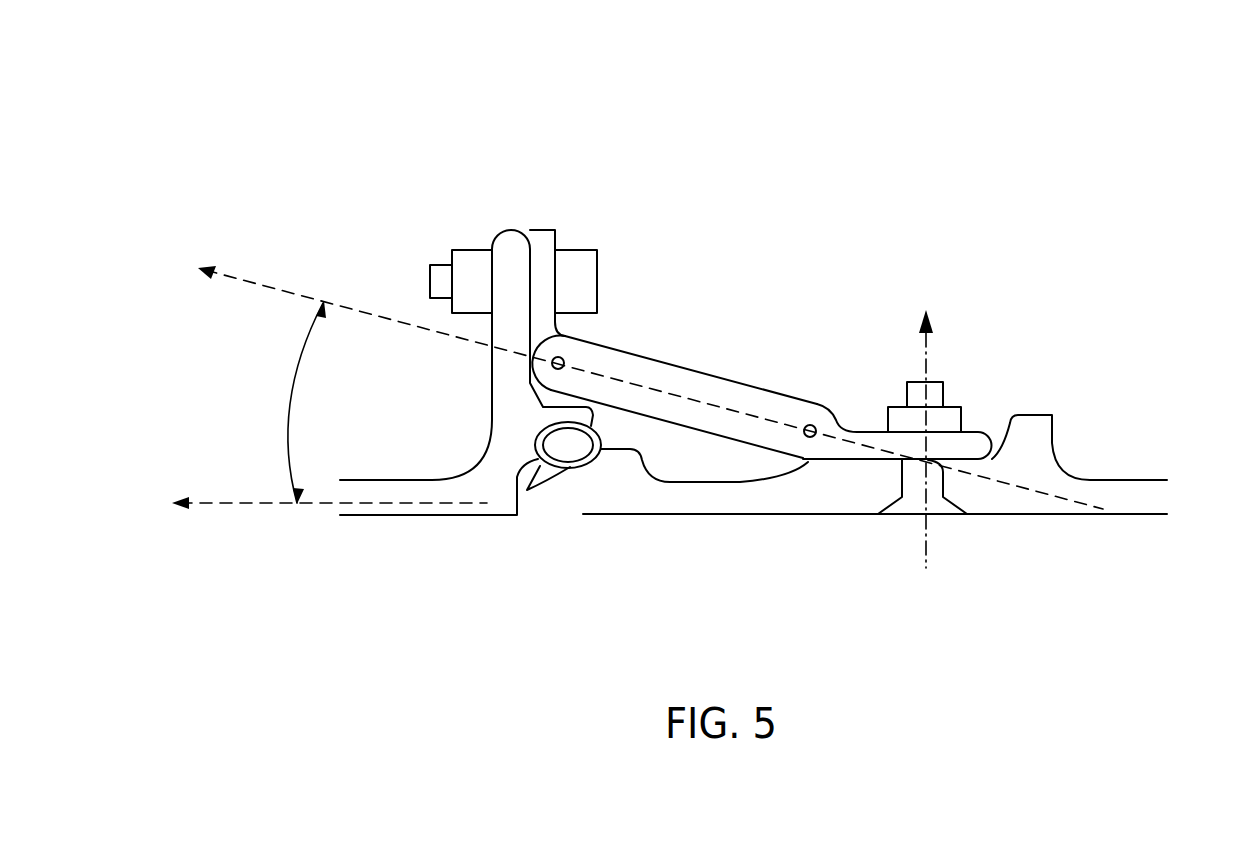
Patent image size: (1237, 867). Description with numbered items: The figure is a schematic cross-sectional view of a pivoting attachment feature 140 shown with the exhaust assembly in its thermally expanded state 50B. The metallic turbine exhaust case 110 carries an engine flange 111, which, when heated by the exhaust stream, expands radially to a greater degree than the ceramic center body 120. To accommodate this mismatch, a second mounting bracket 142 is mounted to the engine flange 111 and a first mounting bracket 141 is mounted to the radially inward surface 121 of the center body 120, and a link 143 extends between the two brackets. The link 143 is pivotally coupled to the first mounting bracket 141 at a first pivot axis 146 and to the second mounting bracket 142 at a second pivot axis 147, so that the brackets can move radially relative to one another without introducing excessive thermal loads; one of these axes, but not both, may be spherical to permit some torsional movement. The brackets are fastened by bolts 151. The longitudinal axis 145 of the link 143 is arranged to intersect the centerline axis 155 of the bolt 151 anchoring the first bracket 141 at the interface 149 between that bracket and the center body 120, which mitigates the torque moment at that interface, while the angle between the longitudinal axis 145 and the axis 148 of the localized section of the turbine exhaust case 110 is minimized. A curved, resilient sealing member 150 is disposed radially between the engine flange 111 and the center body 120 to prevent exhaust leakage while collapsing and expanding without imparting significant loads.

The thermally expanded state 50B is at (296, 146).
The turbine exhaust case 110 is at (398, 515).
The engine flange 111 is at (507, 370).
The center body 120 is at (806, 497).
The radially inward surface 121 is at (1000, 450).
The pivoting attachment feature 140 is at (766, 253).
The first mounting bracket 141 is at (835, 427).
The second mounting bracket 142 is at (543, 248).
The link 143 is at (703, 380).
The longitudinal axis 145 is at (390, 318).
The first pivot axis 146 is at (813, 418).
The second pivot axis 147 is at (567, 350).
The axis of localized section of the turbine exhaust case 148 is at (263, 503).
The interface 149 is at (943, 500).
The sealing member 150 is at (568, 463).
The bolt 151 is at (572, 263).
The centerline axis 155 is at (927, 357).